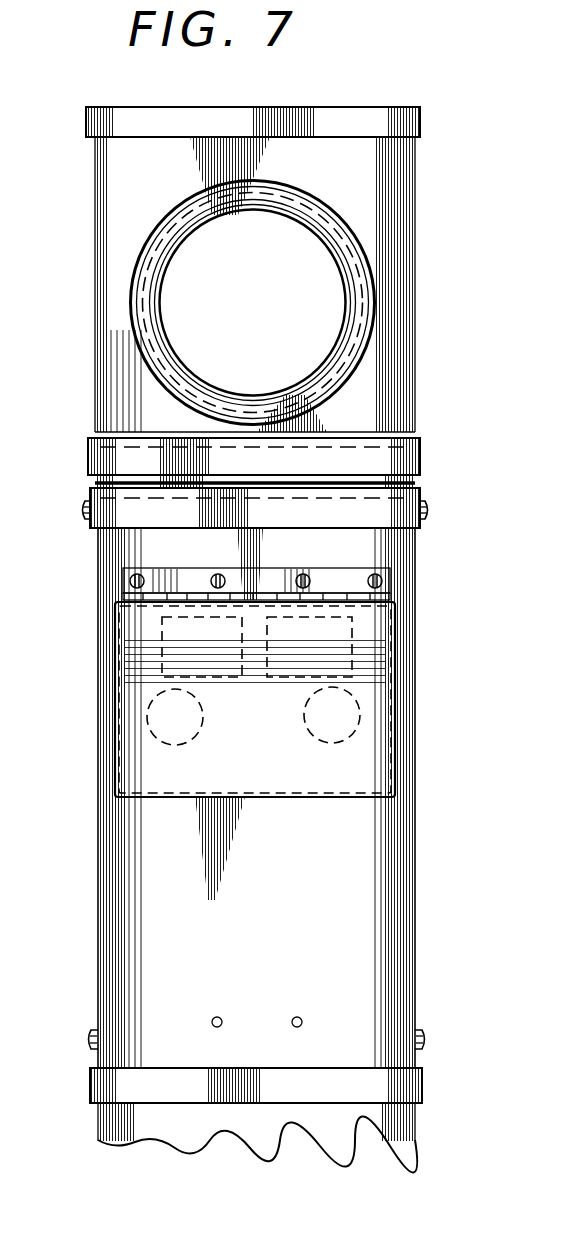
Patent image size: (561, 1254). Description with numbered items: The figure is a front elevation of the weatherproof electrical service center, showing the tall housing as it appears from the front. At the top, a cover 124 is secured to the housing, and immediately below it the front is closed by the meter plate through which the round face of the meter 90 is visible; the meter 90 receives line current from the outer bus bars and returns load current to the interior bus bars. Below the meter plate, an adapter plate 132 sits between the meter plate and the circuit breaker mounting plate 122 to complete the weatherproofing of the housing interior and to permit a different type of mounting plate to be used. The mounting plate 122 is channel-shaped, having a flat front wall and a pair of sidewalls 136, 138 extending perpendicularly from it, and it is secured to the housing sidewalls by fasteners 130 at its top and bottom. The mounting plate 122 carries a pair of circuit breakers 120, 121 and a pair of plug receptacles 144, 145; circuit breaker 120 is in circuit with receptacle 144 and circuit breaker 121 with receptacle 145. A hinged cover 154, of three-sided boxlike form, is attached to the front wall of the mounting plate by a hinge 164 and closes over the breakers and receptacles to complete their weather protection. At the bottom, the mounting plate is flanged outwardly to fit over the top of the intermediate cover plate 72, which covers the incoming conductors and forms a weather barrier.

The intermediate cover plate 72 is at (213, 1128).
The meter 90 is at (292, 215).
The circuit breaker 120 is at (162, 638).
The circuit breaker 121 is at (352, 637).
The circuit breaker mounting plate 122 is at (168, 850).
The cover 124 is at (205, 107).
The fasteners 130 is at (80, 510).
The adapter plate 132 is at (372, 483).
The sidewall 136 is at (98, 915).
The sidewall 138 is at (416, 905).
The plug receptacle 144 is at (183, 728).
The plug receptacle 145 is at (362, 728).
The hinged cover 154 is at (368, 772).
The hinge 164 is at (392, 595).